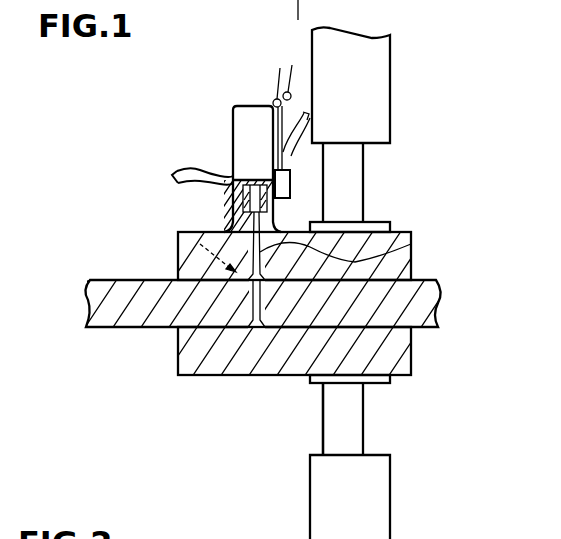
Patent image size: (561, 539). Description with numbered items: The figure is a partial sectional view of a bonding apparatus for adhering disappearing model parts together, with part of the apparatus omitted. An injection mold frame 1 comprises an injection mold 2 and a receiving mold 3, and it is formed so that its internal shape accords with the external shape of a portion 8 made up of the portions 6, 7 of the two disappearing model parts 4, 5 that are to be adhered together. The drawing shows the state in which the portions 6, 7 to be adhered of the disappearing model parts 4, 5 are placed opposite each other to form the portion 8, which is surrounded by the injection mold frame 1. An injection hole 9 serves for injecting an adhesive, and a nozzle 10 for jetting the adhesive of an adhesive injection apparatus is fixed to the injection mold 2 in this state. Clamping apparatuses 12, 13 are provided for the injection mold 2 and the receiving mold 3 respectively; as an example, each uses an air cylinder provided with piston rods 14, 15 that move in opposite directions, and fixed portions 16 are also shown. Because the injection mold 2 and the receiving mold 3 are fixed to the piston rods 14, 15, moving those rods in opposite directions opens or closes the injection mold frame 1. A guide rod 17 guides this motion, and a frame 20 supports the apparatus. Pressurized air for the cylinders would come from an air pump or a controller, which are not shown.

The injection mold frame 1 is at (143, 225).
The injection mold 2 is at (177, 253).
The receiving mold 3 is at (177, 368).
The disappearing model part 4 is at (87, 316).
The disappearing model part 5 is at (435, 313).
The portion to be adhered 6 is at (228, 317).
The portion to be adhered 7 is at (284, 317).
The portion 8 is at (236, 230).
The injection hole 9 is at (411, 244).
The nozzle 10 is at (233, 150).
The clamping apparatus 12 is at (390, 72).
The clamping apparatus 13 is at (390, 510).
The piston rod 14 is at (363, 183).
The piston rod 15 is at (363, 423).
The fixed portions 16 is at (390, 222).
The guide rod 17 is at (323, 423).
The frame 20 is at (290, 190).